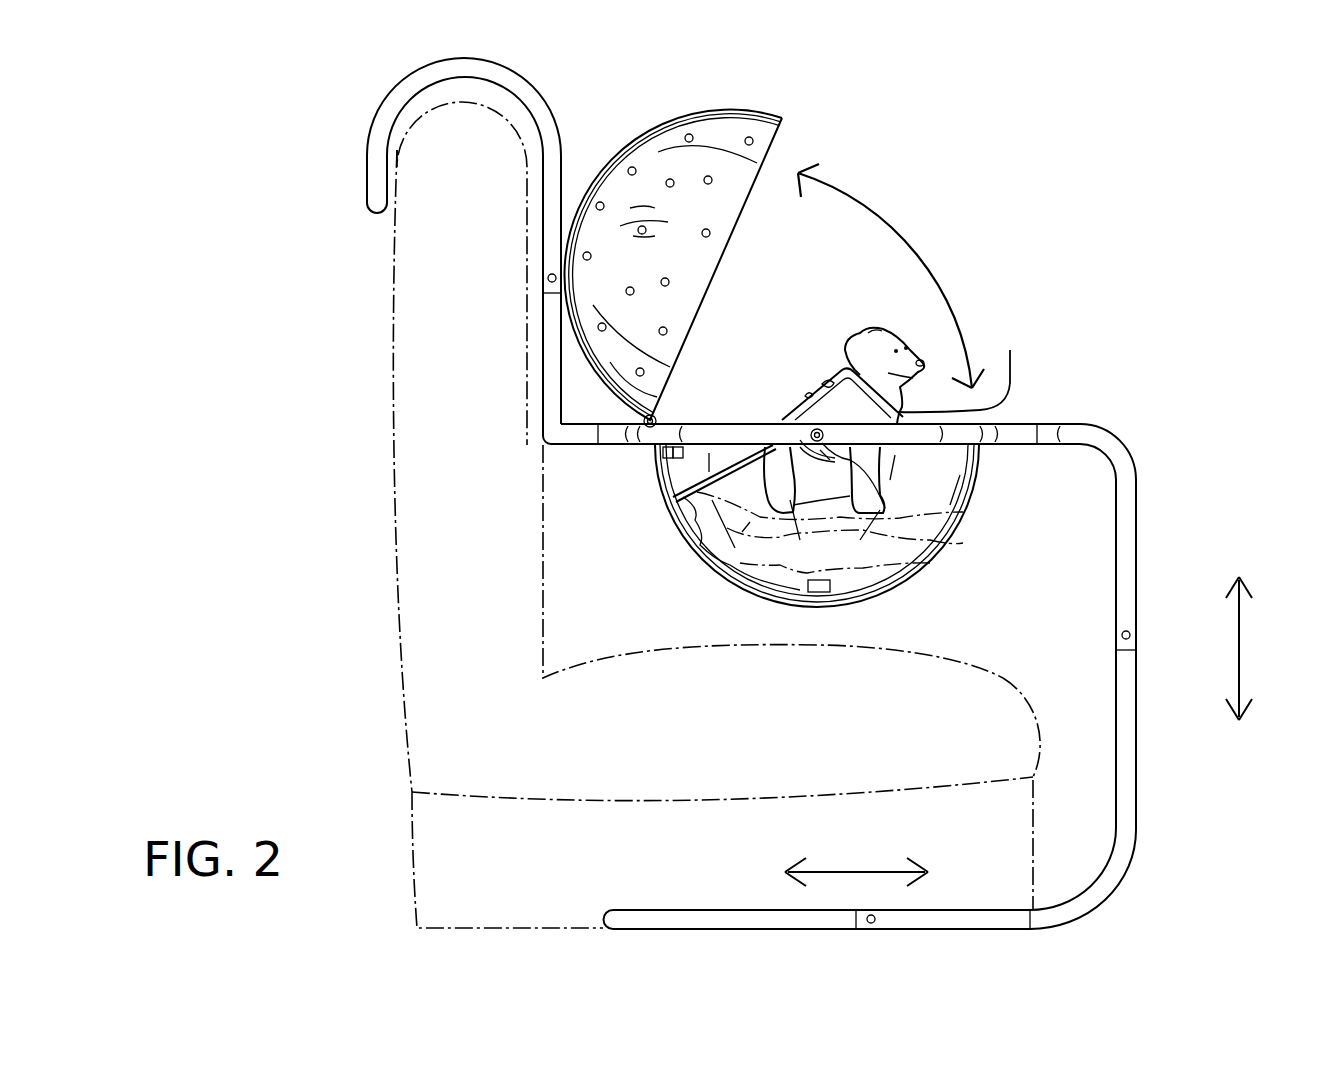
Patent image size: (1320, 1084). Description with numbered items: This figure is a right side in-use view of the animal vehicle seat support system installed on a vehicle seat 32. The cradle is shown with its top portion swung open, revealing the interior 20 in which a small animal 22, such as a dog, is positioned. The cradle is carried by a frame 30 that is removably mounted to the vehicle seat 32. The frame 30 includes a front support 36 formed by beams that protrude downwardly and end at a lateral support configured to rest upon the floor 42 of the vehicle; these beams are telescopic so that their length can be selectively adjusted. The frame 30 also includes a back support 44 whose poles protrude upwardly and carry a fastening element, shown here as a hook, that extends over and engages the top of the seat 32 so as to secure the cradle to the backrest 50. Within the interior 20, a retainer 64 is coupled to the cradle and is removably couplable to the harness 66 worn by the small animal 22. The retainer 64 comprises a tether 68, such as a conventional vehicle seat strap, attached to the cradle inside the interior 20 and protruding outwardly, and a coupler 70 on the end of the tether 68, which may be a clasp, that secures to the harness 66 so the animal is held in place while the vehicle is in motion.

The interior 20 is at (938, 372).
The small animal 22 is at (880, 497).
The frame 30 is at (1054, 392).
The vehicle seat 32 is at (437, 505).
The front support 36 is at (1166, 479).
The floor 42 is at (553, 928).
The back support 44 is at (552, 88).
The backrest 50 is at (410, 313).
The retainer 64 is at (765, 403).
The harness 66 is at (964, 362).
The tether 68 is at (673, 492).
The coupler 70 is at (824, 382).